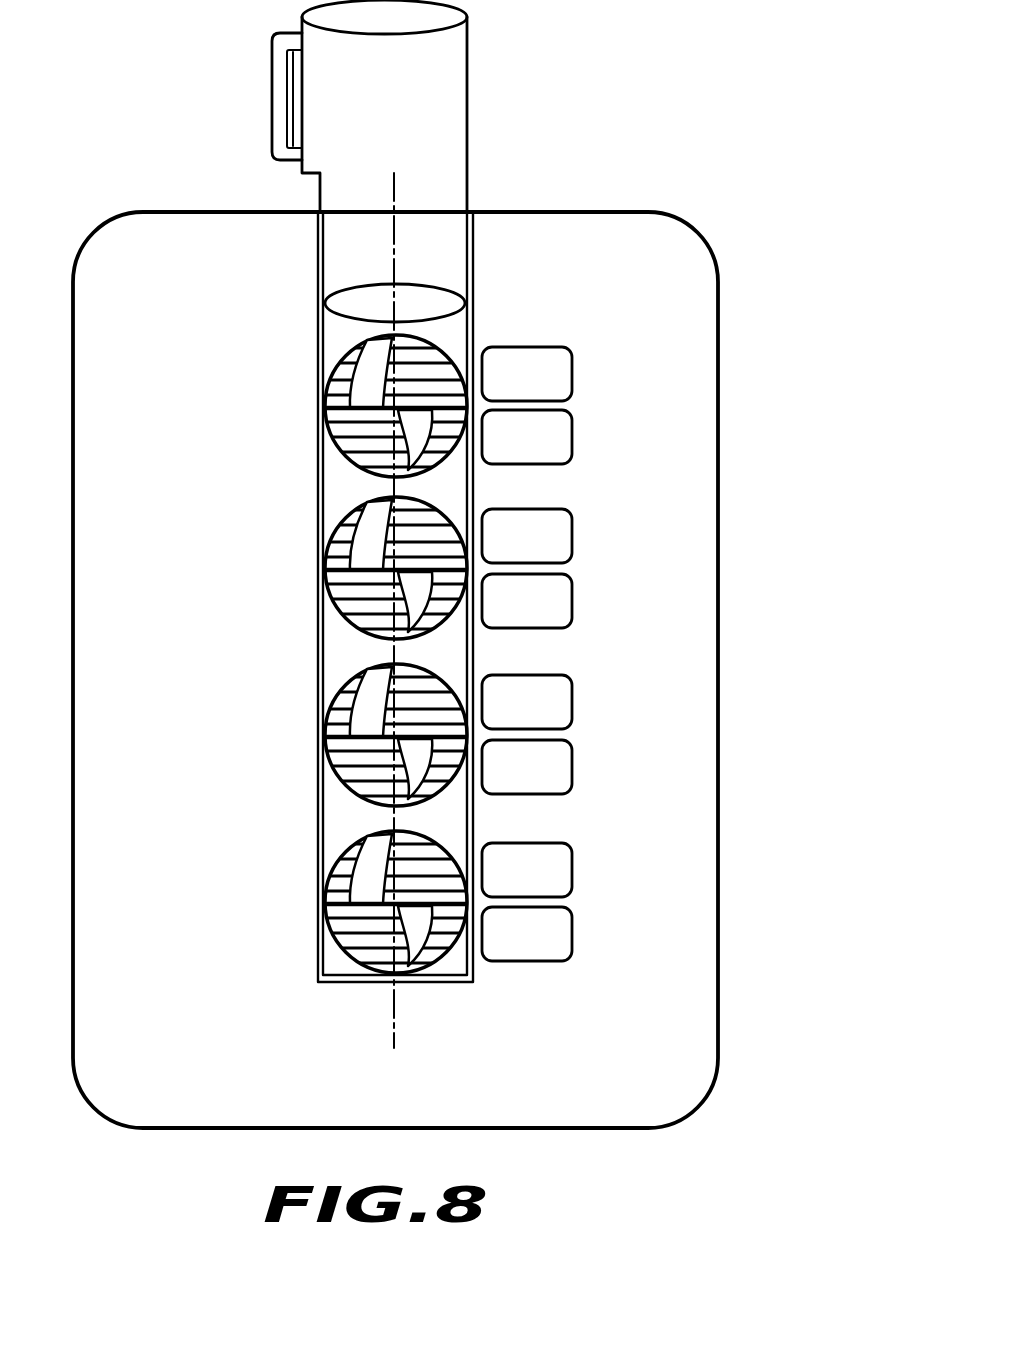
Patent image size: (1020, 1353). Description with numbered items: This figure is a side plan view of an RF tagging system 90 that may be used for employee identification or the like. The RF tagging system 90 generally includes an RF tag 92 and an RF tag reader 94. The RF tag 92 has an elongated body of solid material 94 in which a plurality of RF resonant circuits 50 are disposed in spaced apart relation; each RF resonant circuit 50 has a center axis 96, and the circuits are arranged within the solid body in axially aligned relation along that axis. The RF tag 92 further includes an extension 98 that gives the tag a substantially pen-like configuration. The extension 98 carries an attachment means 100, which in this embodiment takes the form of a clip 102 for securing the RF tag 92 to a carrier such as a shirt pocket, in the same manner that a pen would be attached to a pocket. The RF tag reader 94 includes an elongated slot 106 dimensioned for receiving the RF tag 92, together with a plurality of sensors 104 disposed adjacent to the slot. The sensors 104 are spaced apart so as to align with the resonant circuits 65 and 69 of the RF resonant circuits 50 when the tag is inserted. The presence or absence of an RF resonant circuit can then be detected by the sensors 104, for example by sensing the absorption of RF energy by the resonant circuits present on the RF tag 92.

The RF resonant circuit 50 is at (353, 367).
The resonant circuit 65 is at (338, 372).
The resonant circuit 69 is at (330, 418).
The RF tagging system 90 is at (588, 79).
The RF tag 92 is at (468, 172).
The RF tag reader 94 is at (335, 465).
The center axis 96 is at (394, 240).
The extension 98 is at (432, 120).
The attachment means 100 is at (256, 70).
The clip 102 is at (283, 135).
The sensor 104 is at (572, 375).
The elongated slot 106 is at (472, 258).